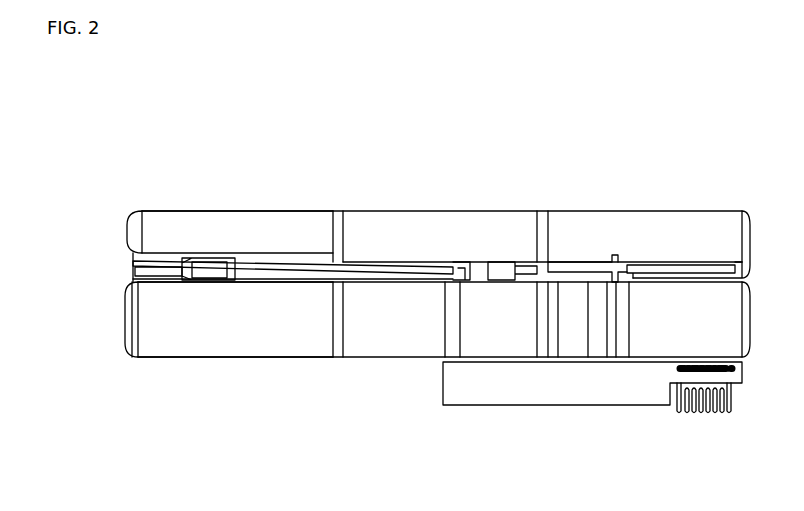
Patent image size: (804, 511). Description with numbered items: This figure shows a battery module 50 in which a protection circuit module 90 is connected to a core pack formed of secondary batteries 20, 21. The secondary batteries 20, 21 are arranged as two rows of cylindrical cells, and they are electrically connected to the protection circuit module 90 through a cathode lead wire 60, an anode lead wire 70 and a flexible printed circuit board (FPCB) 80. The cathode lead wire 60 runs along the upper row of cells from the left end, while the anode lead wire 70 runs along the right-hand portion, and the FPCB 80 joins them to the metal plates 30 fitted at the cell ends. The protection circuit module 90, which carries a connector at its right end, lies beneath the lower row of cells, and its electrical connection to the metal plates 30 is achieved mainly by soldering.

The battery pack 50 is at (79, 92).
The secondary battery 20 is at (208, 218).
The secondary battery 21 is at (220, 345).
The metal plate 30 is at (128, 212).
The cathode lead wire 60 is at (290, 258).
The anode lead wire 70 is at (653, 262).
The flexible printed circuit board (FPCB) 80 is at (598, 298).
The protection circuit module 90 is at (571, 393).